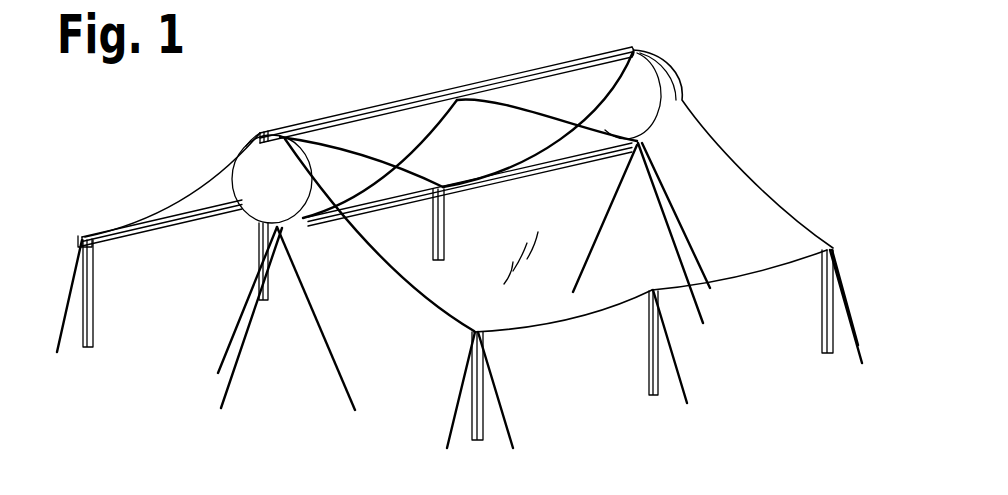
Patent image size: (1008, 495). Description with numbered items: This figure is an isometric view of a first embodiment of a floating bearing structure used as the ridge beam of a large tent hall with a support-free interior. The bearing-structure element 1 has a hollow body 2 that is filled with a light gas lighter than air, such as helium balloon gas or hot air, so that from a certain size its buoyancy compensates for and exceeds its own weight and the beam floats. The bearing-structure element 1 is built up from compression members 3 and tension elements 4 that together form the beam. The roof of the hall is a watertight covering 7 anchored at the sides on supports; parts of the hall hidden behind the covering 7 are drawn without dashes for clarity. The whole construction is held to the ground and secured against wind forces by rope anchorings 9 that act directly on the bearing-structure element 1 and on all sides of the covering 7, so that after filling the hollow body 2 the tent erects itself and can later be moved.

The bearing-structure element 1 is at (417, 50).
The hollow body 2 is at (495, 130).
The compression members 3 is at (565, 63).
The tension elements 4 is at (427, 147).
The covering 7 is at (195, 187).
The rope anchorings 9 is at (222, 357).